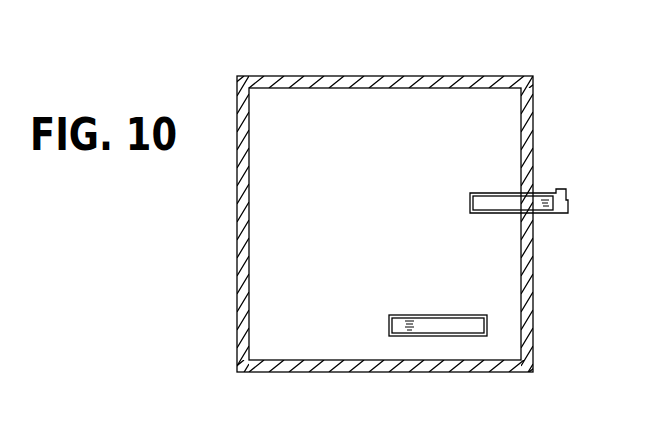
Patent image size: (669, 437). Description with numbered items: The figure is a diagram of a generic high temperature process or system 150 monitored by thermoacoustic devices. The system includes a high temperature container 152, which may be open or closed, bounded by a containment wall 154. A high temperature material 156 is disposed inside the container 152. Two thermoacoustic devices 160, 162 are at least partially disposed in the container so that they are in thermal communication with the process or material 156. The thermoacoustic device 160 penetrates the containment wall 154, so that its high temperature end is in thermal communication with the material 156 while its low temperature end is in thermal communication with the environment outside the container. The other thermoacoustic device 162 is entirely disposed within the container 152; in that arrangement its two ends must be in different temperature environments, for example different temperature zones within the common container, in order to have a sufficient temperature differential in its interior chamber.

The high temperature process or system 150 is at (543, 67).
The high temperature container 152 is at (350, 73).
The containment wall 154 is at (535, 260).
The high temperature material 156 is at (385, 233).
The thermoacoustic device 160 is at (510, 186).
The thermoacoustic device 162 is at (442, 340).